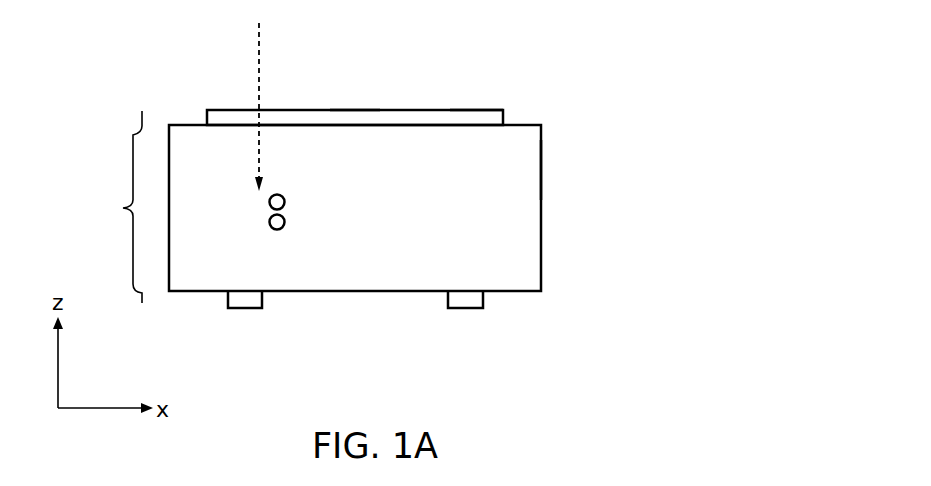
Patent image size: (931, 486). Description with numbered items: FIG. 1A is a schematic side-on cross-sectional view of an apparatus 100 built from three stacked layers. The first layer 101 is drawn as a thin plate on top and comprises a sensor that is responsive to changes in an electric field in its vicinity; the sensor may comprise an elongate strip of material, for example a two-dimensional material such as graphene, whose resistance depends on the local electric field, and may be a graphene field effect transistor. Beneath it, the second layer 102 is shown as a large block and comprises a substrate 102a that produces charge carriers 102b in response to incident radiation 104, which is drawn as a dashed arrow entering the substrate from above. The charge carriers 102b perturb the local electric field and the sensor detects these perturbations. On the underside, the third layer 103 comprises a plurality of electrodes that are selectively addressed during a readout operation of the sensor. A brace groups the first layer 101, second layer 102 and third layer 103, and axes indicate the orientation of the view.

The apparatus 100 is at (679, 76).
The first layer 101 is at (140, 120).
The second layer 102 is at (123, 208).
The third layer 103 is at (142, 297).
The incident radiation 104 is at (260, 58).
The substrate 102a is at (527, 168).
The charge carriers 102b is at (288, 211).